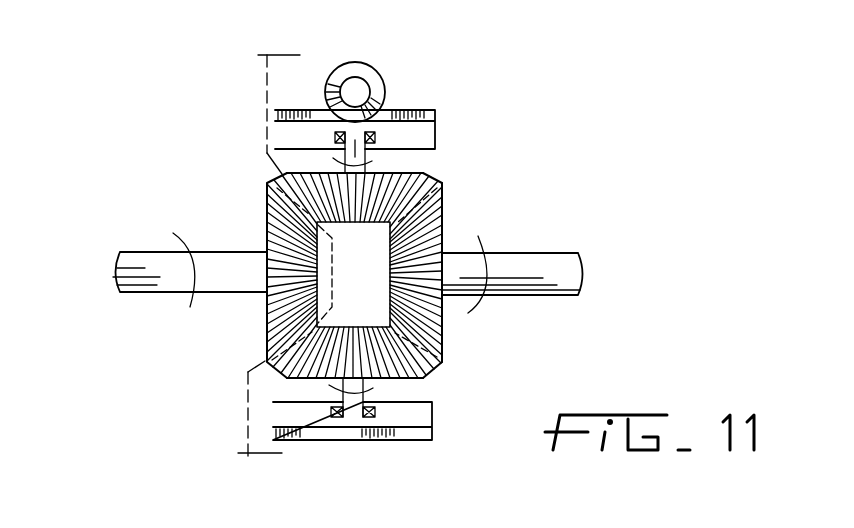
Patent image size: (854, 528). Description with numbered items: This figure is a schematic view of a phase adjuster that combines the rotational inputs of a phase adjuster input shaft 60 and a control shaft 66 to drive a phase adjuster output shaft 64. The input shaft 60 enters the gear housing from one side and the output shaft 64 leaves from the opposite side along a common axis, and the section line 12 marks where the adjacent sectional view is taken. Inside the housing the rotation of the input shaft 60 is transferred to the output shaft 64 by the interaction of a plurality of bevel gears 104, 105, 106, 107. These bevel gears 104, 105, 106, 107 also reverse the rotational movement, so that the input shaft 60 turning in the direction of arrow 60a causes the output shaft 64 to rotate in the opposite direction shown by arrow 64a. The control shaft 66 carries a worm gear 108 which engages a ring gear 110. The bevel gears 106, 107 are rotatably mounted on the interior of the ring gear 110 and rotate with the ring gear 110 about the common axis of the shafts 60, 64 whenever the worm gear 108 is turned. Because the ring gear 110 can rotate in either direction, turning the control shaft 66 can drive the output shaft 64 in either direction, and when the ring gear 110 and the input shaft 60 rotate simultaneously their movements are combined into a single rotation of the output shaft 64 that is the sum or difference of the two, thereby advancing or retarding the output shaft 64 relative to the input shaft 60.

The section line 12- 12 is at (251, 255).
The phase adjuster input shaft 60 is at (157, 289).
The arrow 60a is at (203, 273).
The phase adjuster output shaft 64 is at (548, 268).
The arrow 64a is at (487, 303).
The control shaft 66 is at (350, 88).
The bevel gear 104 is at (275, 232).
The bevel gear 105 is at (443, 227).
The bevel gear 106 is at (412, 175).
The bevel gear 107 is at (405, 378).
The worm gear 108 is at (352, 63).
The ring gear 110 is at (422, 135).